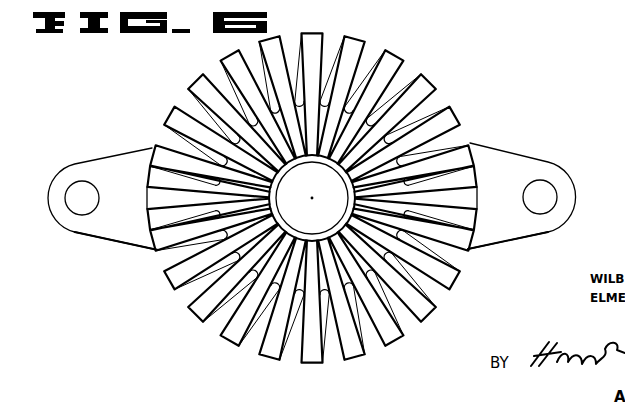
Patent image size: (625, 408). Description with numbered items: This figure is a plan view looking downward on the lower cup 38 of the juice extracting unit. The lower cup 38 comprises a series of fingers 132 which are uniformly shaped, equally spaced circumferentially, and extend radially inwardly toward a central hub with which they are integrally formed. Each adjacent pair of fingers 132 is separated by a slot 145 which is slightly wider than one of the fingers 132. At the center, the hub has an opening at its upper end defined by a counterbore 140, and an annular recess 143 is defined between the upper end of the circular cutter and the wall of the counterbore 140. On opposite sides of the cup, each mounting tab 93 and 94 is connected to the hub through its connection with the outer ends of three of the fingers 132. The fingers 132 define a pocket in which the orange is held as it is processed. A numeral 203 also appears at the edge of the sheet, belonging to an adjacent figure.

The lower cup 38 is at (334, 197).
The mounting tab 93 is at (77, 170).
The mounting tab 94 is at (554, 172).
The fingers 132 is at (232, 66).
The slot 145 is at (157, 172).
The counterbore 140 is at (345, 161).
The annular recess 143 is at (343, 226).
The element of adjacent figure 203 is at (624, 12).